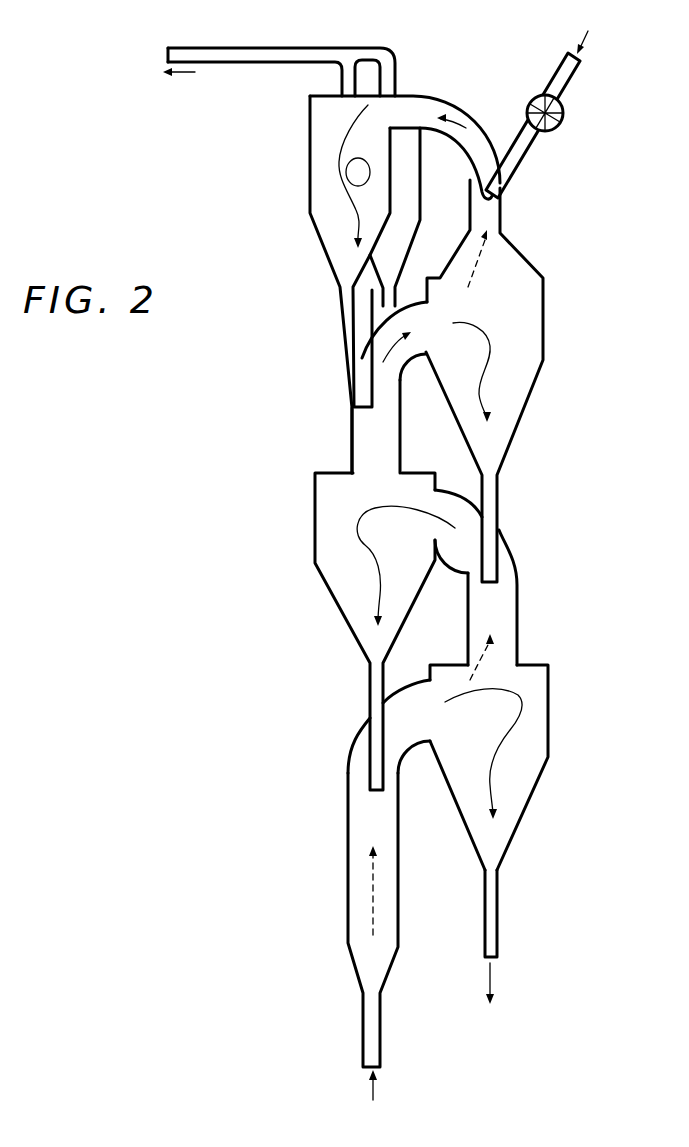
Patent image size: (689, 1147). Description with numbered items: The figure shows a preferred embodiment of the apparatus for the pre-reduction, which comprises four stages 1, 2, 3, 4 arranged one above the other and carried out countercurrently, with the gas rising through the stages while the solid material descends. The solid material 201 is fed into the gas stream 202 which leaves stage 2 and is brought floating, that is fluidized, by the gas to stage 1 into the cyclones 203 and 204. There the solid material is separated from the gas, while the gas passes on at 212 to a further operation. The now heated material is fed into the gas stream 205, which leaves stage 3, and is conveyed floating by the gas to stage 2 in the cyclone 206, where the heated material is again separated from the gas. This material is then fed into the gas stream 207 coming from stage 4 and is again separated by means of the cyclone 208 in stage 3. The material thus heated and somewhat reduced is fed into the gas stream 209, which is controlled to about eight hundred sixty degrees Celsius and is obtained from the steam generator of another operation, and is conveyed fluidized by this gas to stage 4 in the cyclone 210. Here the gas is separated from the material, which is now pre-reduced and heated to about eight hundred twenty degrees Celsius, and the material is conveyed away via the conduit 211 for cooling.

The stage 1 is at (391, 266).
The stage 2 is at (485, 385).
The stage 3 is at (360, 631).
The stage 4 is at (500, 767).
The solid material 201 is at (556, 104).
The gas stream 202 is at (470, 191).
The cyclone 203 is at (372, 150).
The cyclone 204 is at (408, 206).
The gas stream 205 is at (385, 465).
The cyclone 206 is at (528, 321).
The gas stream 207 is at (500, 632).
The cyclone 208 is at (405, 545).
The gas stream 209 is at (385, 962).
The cyclone 210 is at (482, 732).
The conduit 211 is at (515, 937).
The gas outlet 212 is at (260, 44).